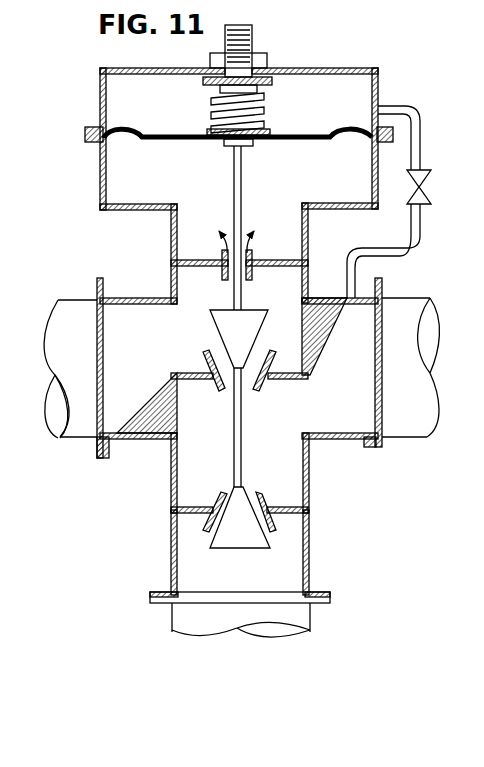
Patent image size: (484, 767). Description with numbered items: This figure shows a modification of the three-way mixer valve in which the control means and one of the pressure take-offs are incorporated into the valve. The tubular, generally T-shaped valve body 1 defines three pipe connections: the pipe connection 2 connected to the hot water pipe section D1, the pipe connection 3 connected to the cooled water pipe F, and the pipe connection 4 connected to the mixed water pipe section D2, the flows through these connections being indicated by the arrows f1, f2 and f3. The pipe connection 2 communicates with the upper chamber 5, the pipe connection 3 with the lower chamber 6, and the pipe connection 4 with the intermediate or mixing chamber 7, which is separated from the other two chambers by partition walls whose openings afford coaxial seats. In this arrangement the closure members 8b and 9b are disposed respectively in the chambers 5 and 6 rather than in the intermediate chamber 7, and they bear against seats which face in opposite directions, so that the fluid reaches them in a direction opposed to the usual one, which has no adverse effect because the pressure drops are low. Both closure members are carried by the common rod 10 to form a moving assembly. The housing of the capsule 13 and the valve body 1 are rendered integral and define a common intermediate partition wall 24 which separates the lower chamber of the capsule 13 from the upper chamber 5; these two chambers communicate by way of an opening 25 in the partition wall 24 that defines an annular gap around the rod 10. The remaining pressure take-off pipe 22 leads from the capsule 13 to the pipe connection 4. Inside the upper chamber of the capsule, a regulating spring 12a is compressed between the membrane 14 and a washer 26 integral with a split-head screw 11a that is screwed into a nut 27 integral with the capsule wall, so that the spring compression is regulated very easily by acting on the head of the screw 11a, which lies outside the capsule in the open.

The valve body 1 is at (170, 283).
The pipe connection 2 is at (119, 297).
The pipe connection 3 is at (172, 582).
The pipe connection 4 is at (357, 445).
The upper chamber 5 is at (169, 330).
The lower chamber 6 is at (198, 565).
The intermediate or mixing chamber 7 is at (210, 432).
The closure member 8b is at (262, 332).
The closure member 9b is at (258, 500).
The rod 10 is at (235, 178).
The screw 11a is at (253, 37).
The regulating spring 12a is at (267, 117).
The capsule 13 is at (102, 93).
The membrane 14 is at (138, 140).
The pressure take-off pipe 22 is at (412, 222).
The intermediate partition wall 24 is at (200, 258).
The opening 25 is at (252, 252).
The washer 26 is at (203, 82).
The nut 27 is at (267, 62).
The pipe section D1 is at (76, 292).
The pipe section D2 is at (414, 297).
The pipe F is at (169, 630).
The inlet flow f1 is at (68, 368).
The bottom flow f2 is at (240, 630).
The outlet flow f3 is at (412, 368).